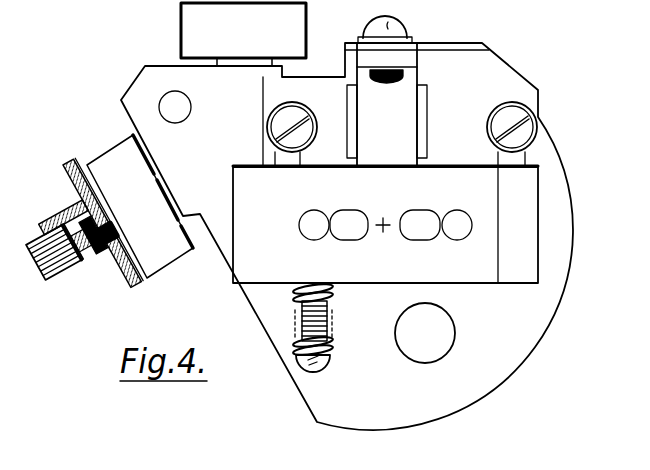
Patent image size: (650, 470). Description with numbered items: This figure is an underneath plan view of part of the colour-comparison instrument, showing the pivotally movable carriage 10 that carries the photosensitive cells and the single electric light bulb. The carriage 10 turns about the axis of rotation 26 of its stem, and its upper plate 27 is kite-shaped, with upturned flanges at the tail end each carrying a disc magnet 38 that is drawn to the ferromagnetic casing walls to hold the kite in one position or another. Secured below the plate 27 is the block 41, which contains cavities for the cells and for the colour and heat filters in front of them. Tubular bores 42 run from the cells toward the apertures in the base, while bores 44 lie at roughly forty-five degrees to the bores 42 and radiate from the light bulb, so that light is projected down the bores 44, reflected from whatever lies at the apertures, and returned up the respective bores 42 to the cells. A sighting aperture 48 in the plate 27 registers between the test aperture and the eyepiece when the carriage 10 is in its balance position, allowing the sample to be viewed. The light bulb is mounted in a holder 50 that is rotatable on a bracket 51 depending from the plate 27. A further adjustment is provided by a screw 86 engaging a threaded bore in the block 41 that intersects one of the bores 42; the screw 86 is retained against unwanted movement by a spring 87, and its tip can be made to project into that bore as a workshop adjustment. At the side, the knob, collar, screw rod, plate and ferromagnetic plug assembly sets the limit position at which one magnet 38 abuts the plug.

The pivotally movable carriage 10 is at (403, 83).
The axis of rotation 26 is at (387, 224).
The upper plate 27 is at (348, 392).
The disc magnet 38 is at (150, 218).
The block 41 is at (523, 275).
The tubular bores 42 is at (311, 227).
The bores 44 is at (364, 213).
The sighting aperture 48 is at (443, 333).
The holder 50 is at (425, 108).
The bracket 51 is at (465, 102).
The screw 86 is at (297, 325).
The spring 87 is at (305, 348).